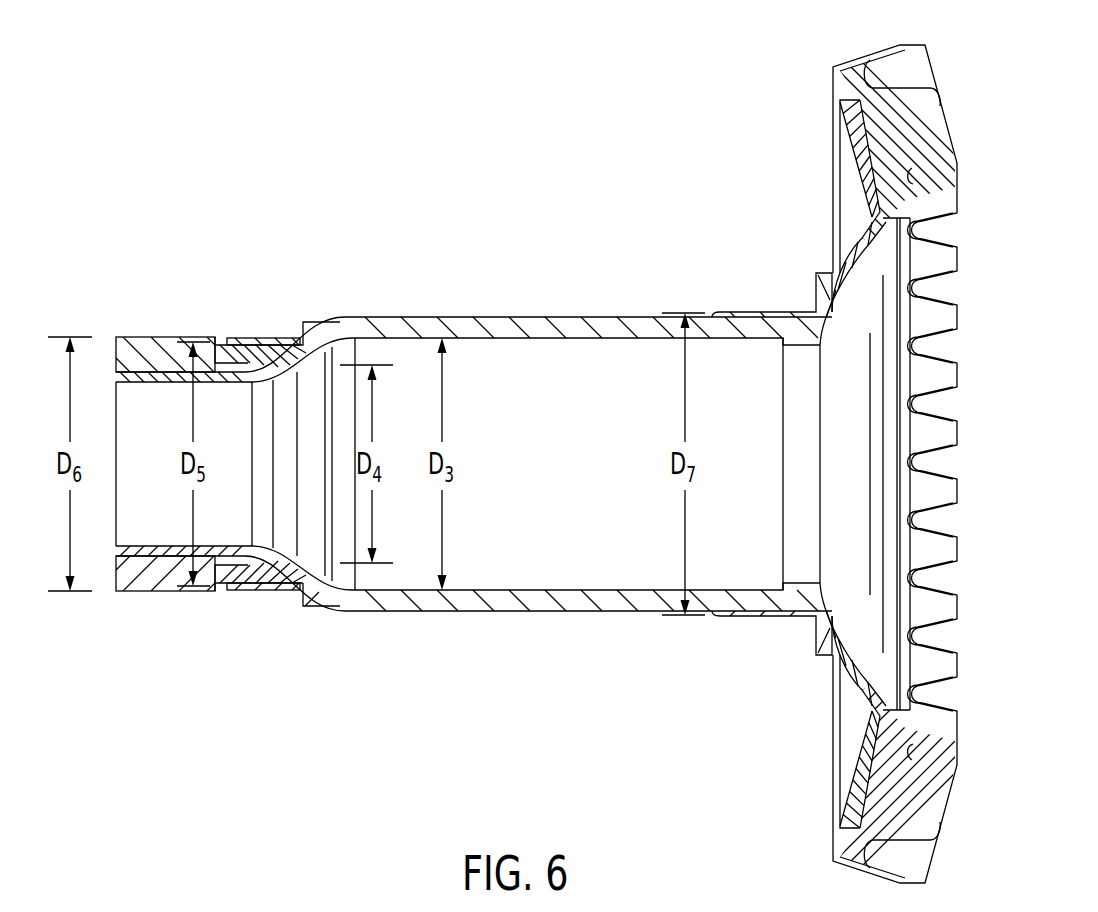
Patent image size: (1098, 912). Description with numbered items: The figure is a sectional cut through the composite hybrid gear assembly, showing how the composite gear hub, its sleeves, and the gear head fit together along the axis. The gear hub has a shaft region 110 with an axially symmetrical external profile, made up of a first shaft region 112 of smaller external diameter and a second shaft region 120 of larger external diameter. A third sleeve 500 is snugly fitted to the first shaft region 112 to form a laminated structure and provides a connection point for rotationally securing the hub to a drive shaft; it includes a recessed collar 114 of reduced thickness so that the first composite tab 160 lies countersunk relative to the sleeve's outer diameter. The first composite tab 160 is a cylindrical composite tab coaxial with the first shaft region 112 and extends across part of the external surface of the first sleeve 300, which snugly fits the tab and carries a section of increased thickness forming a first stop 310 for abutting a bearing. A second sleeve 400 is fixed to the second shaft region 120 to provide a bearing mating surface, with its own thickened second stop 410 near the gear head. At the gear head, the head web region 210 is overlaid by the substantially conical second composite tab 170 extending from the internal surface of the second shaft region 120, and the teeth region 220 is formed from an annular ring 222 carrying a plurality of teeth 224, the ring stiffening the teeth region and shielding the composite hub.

The shaft region 110 is at (557, 712).
The first shaft region 112 is at (143, 552).
The recessed collar 114 is at (243, 368).
The second shaft region 120 is at (567, 327).
The first composite tab 160 is at (283, 356).
The second composite tab 170 is at (868, 308).
The head web region 210 is at (875, 680).
The teeth region 220 is at (930, 110).
The annular ring 222 is at (850, 845).
The teeth 224 is at (943, 372).
The first sleeve 300 is at (243, 588).
The first stop 310 is at (308, 608).
The second sleeve 400 is at (745, 620).
The second stop 410 is at (830, 295).
The third sleeve 500 is at (145, 352).